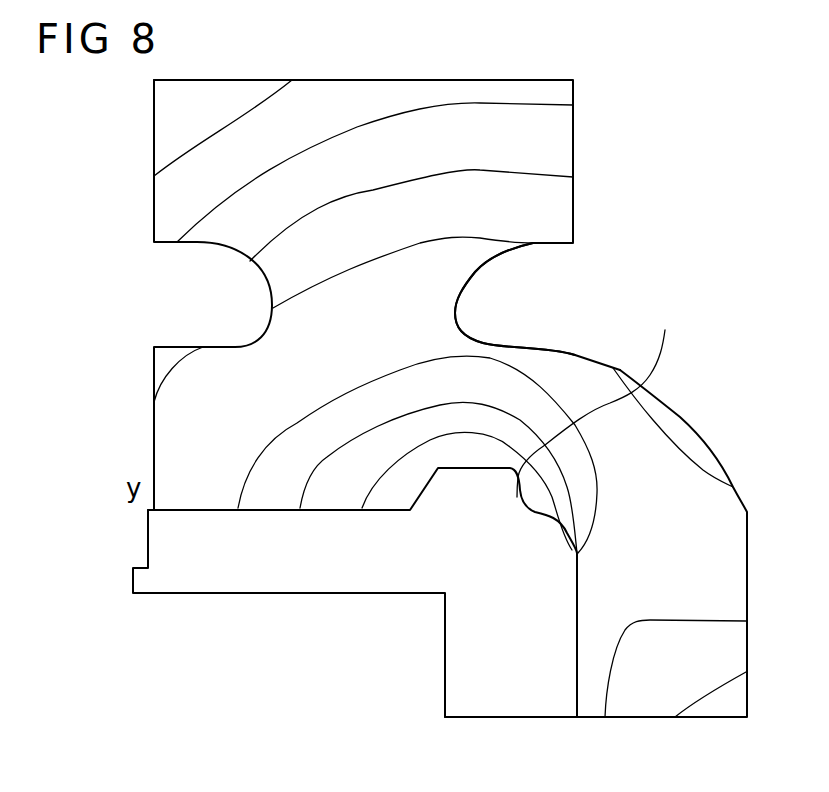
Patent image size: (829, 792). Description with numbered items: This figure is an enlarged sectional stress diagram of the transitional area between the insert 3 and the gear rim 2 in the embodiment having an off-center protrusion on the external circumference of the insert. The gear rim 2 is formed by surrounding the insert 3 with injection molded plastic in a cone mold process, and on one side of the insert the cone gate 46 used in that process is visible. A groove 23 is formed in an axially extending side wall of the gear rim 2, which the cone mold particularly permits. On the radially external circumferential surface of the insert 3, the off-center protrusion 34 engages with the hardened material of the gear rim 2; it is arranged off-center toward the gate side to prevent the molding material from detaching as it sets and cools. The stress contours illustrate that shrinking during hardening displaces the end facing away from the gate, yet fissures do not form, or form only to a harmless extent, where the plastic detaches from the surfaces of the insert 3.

The gear rim 2 is at (160, 299).
The insert 3 is at (129, 548).
The groove 23 is at (477, 272).
The off-center protrusion 34 is at (600, 399).
The cone gate 46 is at (697, 427).